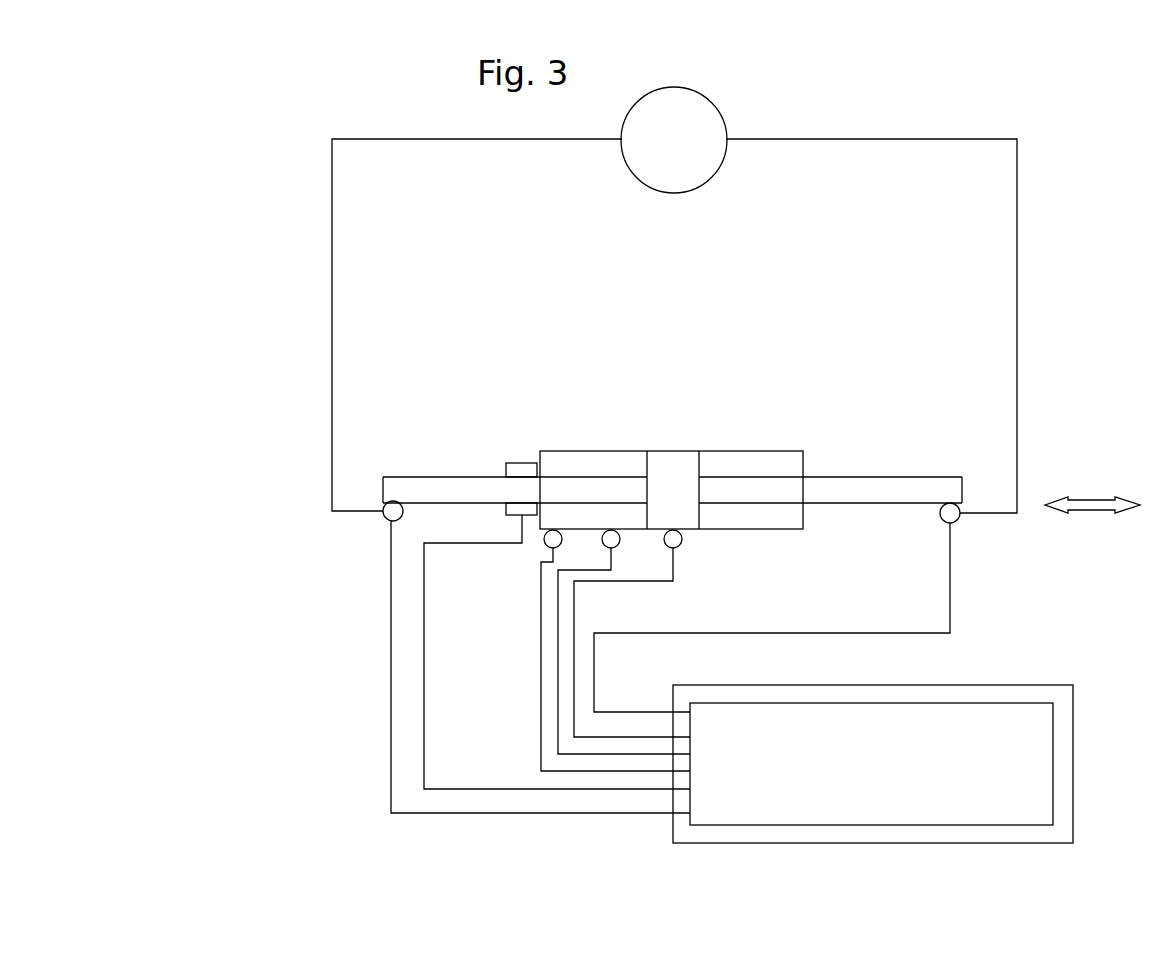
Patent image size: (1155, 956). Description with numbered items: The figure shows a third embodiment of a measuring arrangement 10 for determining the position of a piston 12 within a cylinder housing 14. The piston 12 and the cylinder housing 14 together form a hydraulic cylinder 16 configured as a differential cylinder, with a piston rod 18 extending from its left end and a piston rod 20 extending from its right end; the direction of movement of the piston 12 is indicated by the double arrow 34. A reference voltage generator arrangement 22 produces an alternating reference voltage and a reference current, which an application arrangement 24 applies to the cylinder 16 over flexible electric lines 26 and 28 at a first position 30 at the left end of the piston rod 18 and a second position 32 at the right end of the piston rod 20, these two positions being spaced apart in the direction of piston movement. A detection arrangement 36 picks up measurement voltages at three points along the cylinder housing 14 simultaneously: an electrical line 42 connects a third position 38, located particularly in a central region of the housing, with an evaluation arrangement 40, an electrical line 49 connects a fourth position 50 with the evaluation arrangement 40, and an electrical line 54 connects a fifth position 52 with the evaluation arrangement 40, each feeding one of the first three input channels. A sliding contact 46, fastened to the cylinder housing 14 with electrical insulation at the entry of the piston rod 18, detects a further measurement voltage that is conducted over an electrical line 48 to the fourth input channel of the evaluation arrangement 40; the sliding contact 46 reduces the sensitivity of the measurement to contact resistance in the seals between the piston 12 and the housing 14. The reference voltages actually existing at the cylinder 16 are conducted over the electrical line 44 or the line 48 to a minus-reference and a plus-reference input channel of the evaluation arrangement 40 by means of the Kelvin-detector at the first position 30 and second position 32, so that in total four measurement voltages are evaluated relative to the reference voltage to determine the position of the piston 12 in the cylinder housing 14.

The measuring arrangement 10 is at (872, 103).
The piston 12 is at (733, 477).
The cylinder housing 14 is at (778, 451).
The cylinder 16 is at (619, 440).
The piston rod 18 is at (462, 488).
The piston rod 20 is at (893, 490).
The reference voltage generator arrangement 22 is at (700, 92).
The application arrangement 24 is at (290, 311).
The electric line 26 is at (392, 139).
The electric line 28 is at (893, 139).
The first position 30 is at (384, 507).
The second position 32 is at (958, 521).
The double arrow 34 is at (1095, 500).
The detection arrangement 36 is at (679, 664).
The third position 38 is at (682, 540).
The evaluation arrangement 40 is at (873, 745).
The electrical line 42 is at (574, 605).
The electrical lines 44 is at (391, 622).
The sliding contact 46 is at (514, 513).
The electrical line 48 is at (424, 620).
The electrical line 49 is at (558, 630).
The fourth position 50 is at (614, 538).
The fifth position 52 is at (556, 538).
The electrical line 54 is at (541, 687).